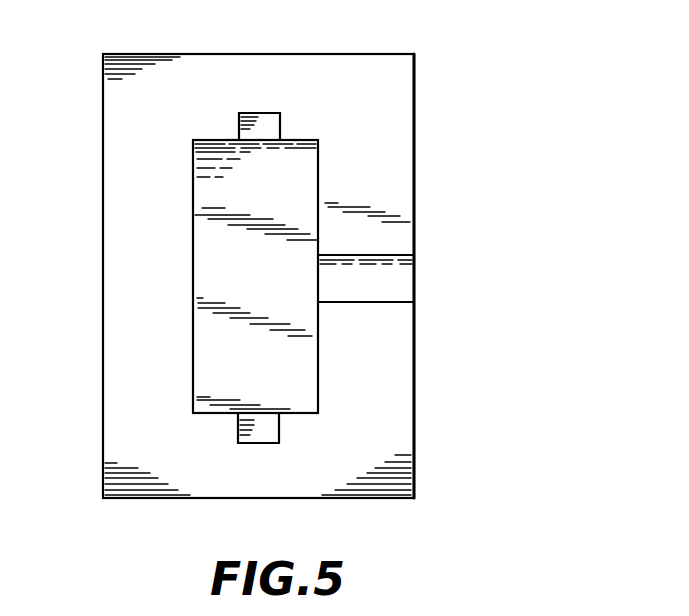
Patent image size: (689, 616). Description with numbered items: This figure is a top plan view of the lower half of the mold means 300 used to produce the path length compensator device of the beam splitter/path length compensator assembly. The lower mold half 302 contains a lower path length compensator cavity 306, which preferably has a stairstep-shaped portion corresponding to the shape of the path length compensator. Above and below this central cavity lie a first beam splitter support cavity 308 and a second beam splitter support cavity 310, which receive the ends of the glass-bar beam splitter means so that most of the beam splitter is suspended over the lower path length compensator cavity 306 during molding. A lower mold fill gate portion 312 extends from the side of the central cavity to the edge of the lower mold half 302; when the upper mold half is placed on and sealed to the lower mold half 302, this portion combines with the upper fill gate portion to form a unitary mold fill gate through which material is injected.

The mold means 300 is at (372, 276).
The lower mold half 302 is at (442, 130).
The lower path length compensator cavity 306 is at (197, 243).
The first beam splitter support cavity 308 is at (258, 118).
The second beam splitter support cavity 310 is at (263, 438).
The lower mold fill gate portion 312 is at (402, 281).